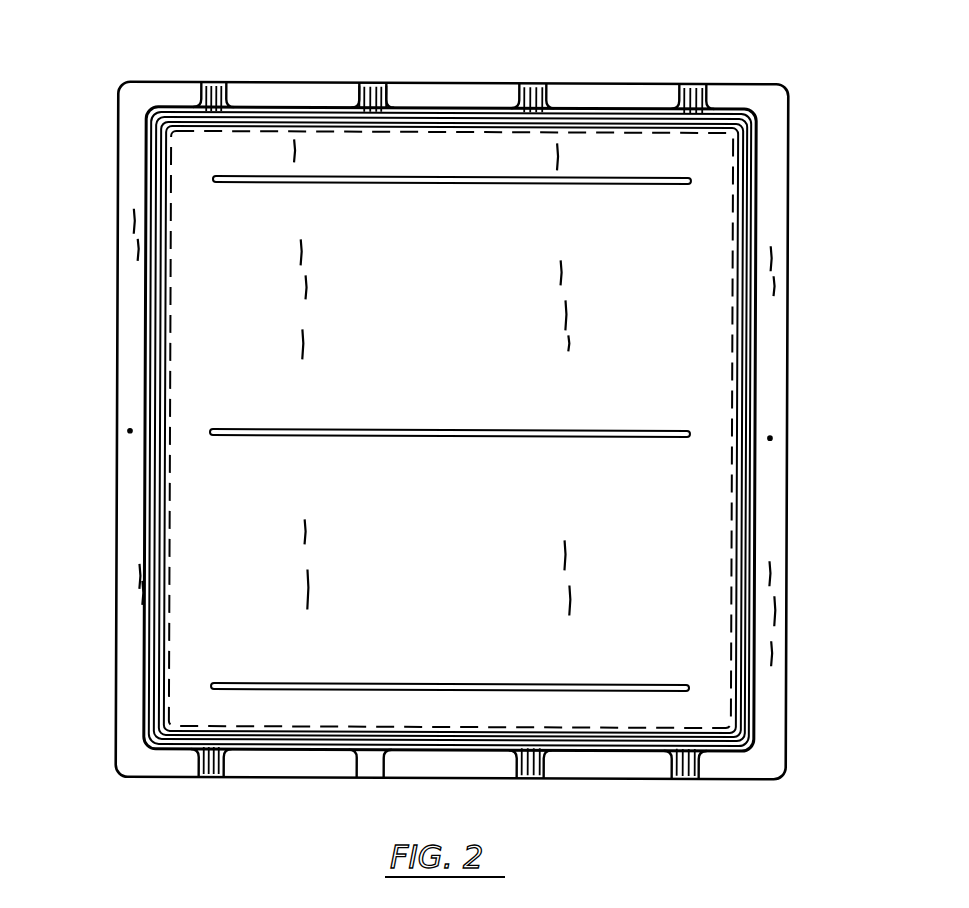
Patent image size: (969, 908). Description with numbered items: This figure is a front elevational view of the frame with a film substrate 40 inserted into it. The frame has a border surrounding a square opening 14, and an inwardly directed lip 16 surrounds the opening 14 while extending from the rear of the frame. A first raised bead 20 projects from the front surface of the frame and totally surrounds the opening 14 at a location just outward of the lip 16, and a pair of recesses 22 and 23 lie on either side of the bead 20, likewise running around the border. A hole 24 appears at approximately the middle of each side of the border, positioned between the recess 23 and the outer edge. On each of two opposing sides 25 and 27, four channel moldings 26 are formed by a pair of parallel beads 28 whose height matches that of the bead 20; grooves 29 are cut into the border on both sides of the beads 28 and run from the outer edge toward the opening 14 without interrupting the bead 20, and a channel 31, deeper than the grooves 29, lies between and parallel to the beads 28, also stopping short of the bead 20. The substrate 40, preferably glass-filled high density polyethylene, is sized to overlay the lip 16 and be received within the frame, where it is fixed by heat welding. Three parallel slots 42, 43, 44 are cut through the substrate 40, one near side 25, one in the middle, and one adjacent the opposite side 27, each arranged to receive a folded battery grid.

The square opening 14 is at (605, 727).
The inwardly directed lip 16 is at (740, 615).
The first raised bead 20 is at (747, 320).
The recess 22 is at (742, 336).
The recess 23 is at (752, 296).
The hole 24 is at (128, 432).
The side 25 is at (765, 86).
The channel molding 26 is at (225, 73).
The side 27 is at (612, 776).
The parallel beads 28 is at (358, 86).
The grooves 29 is at (402, 84).
The channel 31 is at (378, 80).
The film substrate 40 is at (480, 293).
The slot 42 is at (624, 185).
The slot 43 is at (619, 438).
The slot 44 is at (623, 683).